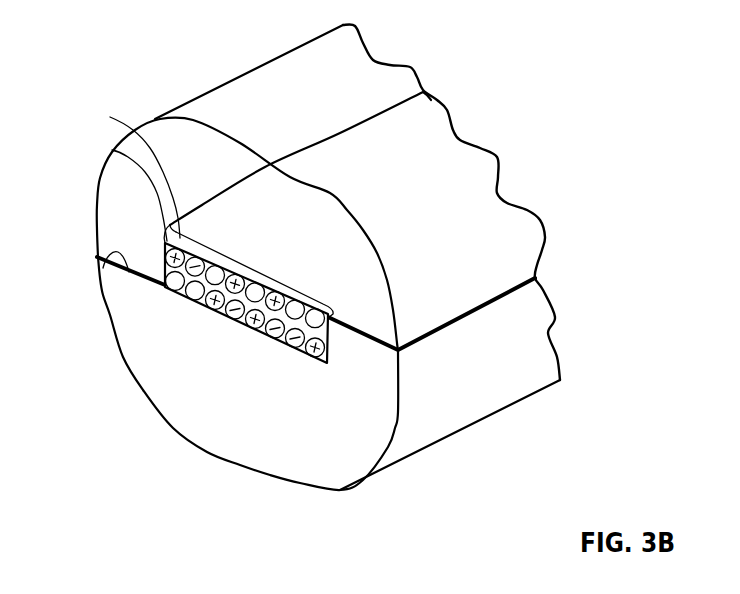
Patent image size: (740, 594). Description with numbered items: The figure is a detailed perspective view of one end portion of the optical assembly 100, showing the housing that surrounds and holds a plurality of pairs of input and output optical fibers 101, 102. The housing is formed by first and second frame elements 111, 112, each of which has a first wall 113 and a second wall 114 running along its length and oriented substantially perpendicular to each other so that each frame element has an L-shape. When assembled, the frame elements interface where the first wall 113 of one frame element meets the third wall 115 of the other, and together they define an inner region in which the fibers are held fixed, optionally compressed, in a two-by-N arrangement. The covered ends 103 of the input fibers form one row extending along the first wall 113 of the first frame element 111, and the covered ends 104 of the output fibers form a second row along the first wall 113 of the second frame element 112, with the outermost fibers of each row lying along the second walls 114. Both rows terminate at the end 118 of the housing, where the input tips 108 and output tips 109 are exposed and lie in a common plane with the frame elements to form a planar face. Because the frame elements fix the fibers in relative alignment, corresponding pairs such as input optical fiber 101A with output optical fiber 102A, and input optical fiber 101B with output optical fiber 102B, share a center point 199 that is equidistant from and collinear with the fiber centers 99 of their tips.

The optical assembly 100 is at (114, 42).
The input optical fibers 101 is at (275, 250).
The input optical fiber 101A is at (112, 150).
The input optical fiber 101B is at (110, 117).
The output optical fibers 102 is at (222, 354).
The output optical fiber 102A is at (283, 333).
The output optical fiber 102B is at (323, 366).
The covered ends 103 is at (303, 151).
The covered ends 104 is at (300, 158).
The input tips 108 is at (158, 293).
The output tips 109 is at (200, 301).
The fiber centers 99 is at (257, 330).
The first frame element 111 is at (146, 109).
The second frame element 112 is at (392, 476).
The first wall 113 is at (239, 300).
The second wall 114 is at (97, 212).
The third wall 115 is at (100, 262).
The end of housing 118 is at (318, 445).
The center point 199 is at (252, 267).